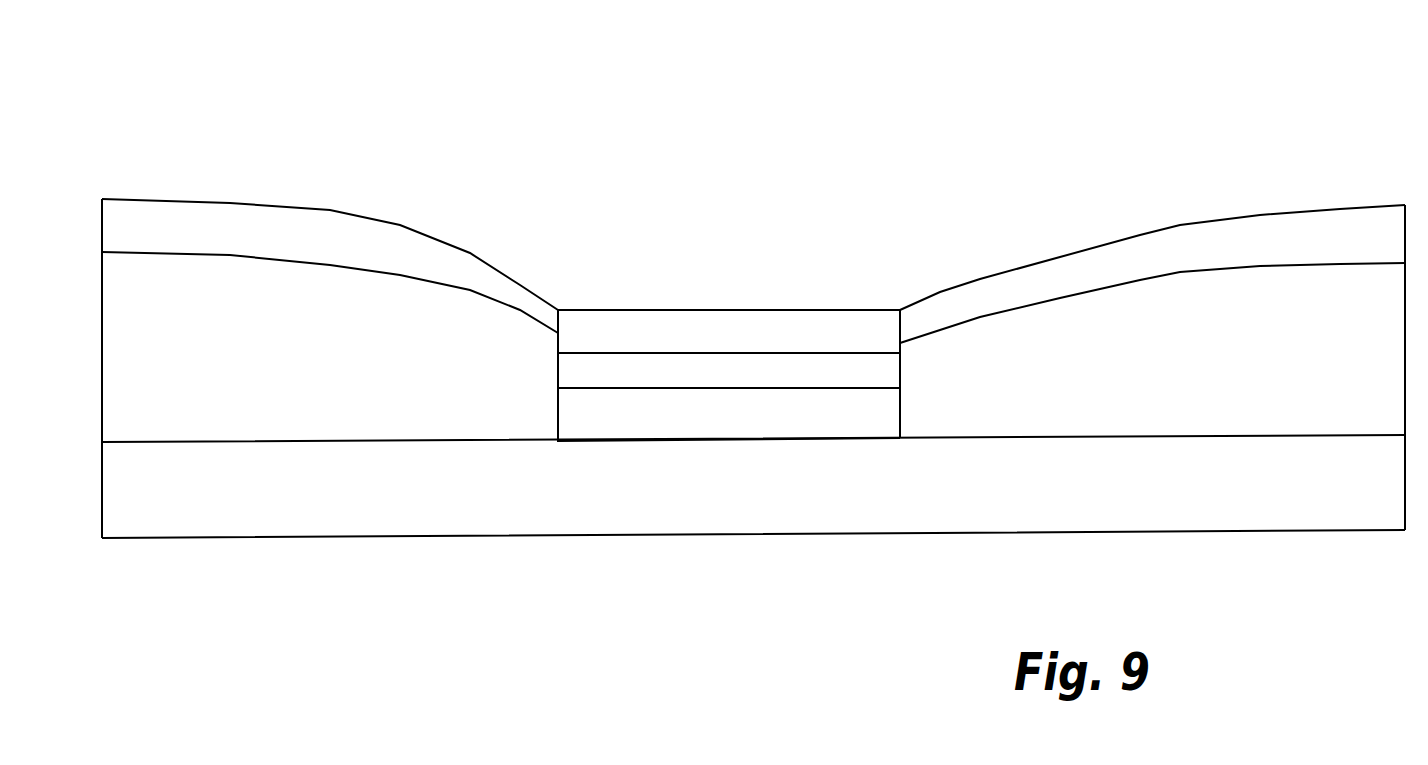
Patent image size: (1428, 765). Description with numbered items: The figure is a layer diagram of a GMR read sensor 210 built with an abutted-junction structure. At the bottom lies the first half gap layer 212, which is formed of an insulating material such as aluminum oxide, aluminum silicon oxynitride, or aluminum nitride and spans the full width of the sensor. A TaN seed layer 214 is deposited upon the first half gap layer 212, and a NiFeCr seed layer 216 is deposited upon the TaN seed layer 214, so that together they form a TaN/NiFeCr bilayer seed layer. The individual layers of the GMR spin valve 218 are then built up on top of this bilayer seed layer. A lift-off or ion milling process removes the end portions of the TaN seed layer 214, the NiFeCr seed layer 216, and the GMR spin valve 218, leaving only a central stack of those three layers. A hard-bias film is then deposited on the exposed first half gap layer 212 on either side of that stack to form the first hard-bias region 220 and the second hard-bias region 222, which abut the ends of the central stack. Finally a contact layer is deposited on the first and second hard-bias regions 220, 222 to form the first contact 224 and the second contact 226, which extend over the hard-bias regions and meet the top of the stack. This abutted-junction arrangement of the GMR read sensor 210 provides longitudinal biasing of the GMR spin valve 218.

The GMR read sensor 210 is at (1190, 118).
The first half gap layer 212 is at (772, 503).
The TaN seed layer 214 is at (854, 426).
The NiFeCr seed layer 216 is at (858, 387).
The GMR spin valve 218 is at (857, 348).
The first hard-bias region 220 is at (510, 404).
The second hard-bias region 222 is at (961, 406).
The first contact 224 is at (469, 283).
The second contact 226 is at (997, 309).